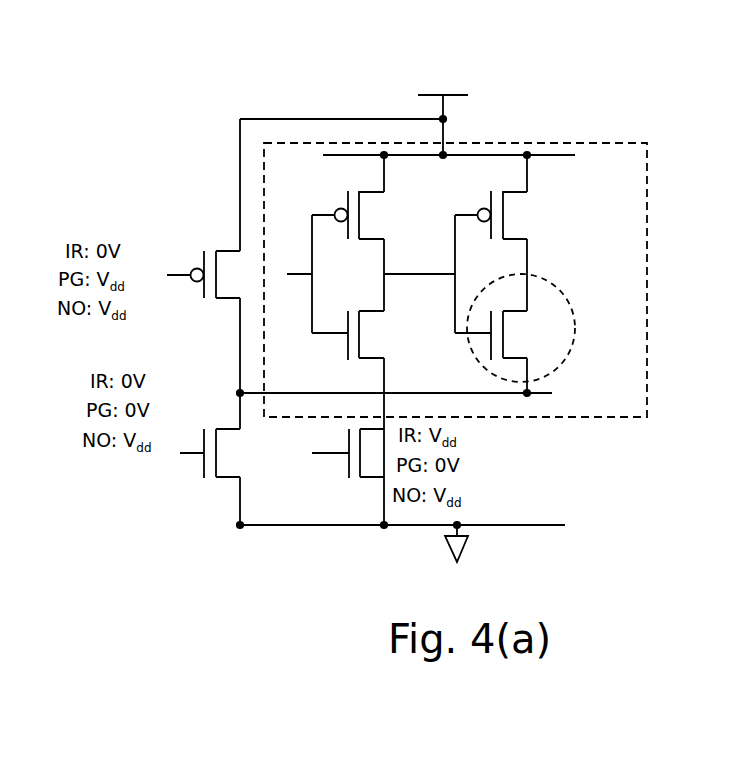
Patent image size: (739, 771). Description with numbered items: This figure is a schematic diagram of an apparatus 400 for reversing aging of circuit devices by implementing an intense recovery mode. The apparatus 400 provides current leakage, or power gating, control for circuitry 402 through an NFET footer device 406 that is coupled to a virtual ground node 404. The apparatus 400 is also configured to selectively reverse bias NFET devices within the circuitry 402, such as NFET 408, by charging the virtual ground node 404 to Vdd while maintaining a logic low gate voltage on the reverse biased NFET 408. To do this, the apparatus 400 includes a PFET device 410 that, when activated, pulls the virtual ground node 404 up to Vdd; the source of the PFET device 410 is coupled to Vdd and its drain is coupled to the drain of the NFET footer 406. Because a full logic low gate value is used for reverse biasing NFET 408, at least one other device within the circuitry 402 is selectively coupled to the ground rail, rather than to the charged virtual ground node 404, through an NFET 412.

The apparatus 400 is at (158, 68).
The circuitry 402 is at (497, 334).
The virtual ground node 404 is at (492, 394).
The NFET footer device 406 is at (232, 478).
The NFET 408 is at (560, 363).
The PFET device 410 is at (233, 250).
The NFET 412 is at (370, 482).